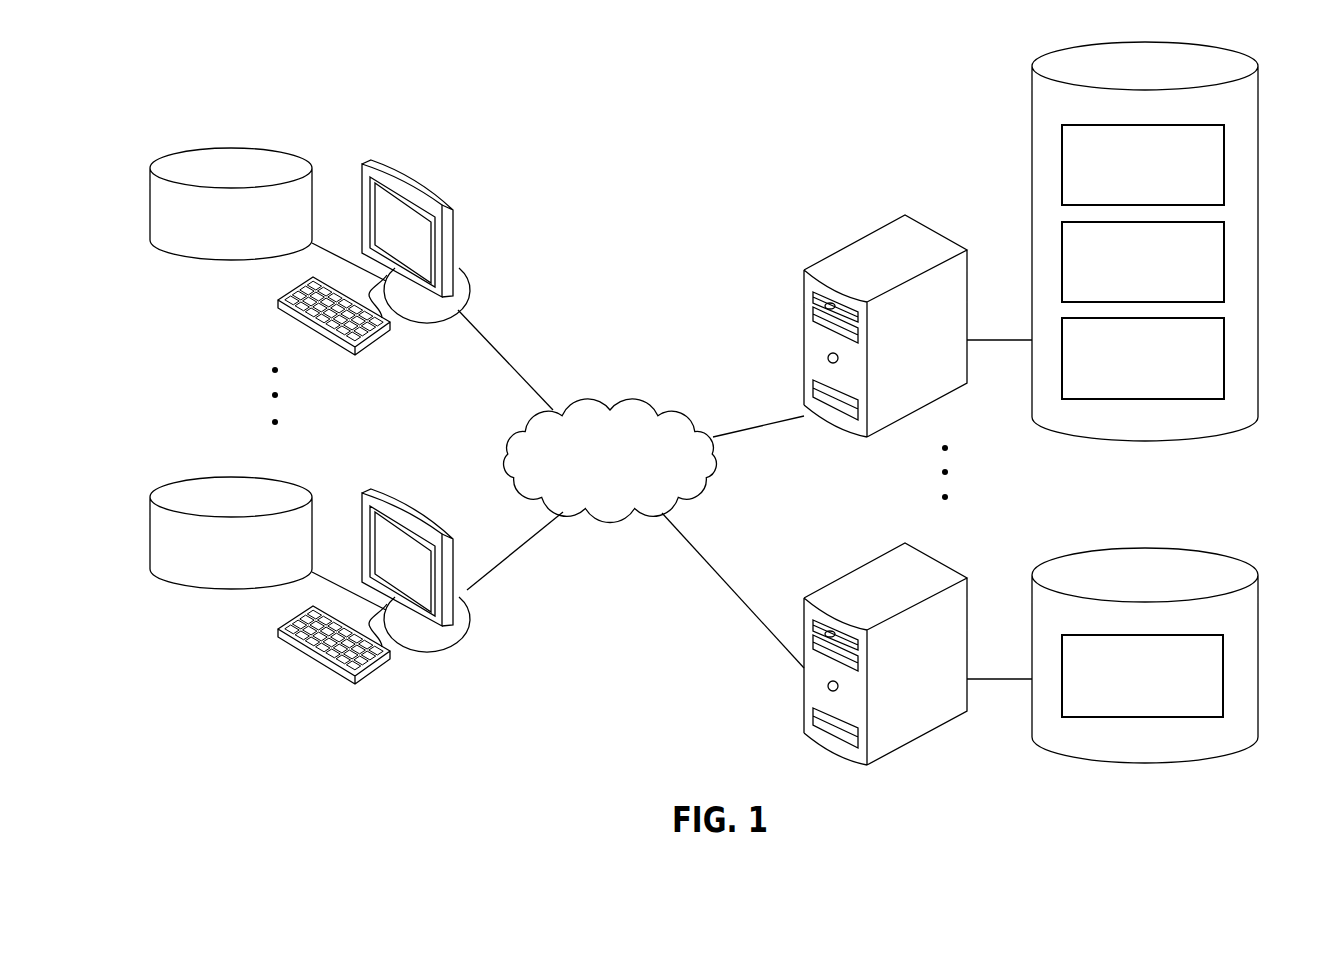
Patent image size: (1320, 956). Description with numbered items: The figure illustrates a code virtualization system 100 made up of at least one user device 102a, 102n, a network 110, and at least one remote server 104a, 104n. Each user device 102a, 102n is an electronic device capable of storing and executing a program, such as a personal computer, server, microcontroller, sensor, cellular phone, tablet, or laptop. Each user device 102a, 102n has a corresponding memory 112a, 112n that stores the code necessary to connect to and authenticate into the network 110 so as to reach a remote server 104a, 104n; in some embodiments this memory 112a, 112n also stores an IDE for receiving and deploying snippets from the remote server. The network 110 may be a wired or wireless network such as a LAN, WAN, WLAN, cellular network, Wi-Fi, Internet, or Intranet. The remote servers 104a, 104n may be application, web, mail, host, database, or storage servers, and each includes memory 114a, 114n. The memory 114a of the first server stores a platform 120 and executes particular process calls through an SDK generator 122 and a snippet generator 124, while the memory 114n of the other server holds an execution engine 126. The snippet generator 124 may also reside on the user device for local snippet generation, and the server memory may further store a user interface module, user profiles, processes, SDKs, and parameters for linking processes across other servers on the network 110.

The code virtualization system 100 is at (487, 62).
The user device 102a is at (414, 172).
The user device 102n is at (414, 500).
The remote server 104a is at (852, 237).
The remote server 104n is at (852, 568).
The network 110 is at (617, 403).
The memory 112a is at (233, 148).
The memory 112n is at (203, 477).
The memory 114a is at (1032, 112).
The memory 114n is at (1147, 547).
The platform 120 is at (1122, 179).
The SDK generator 122 is at (1122, 276).
The snippet generator 124 is at (1122, 372).
The execution engine 126 is at (1122, 690).